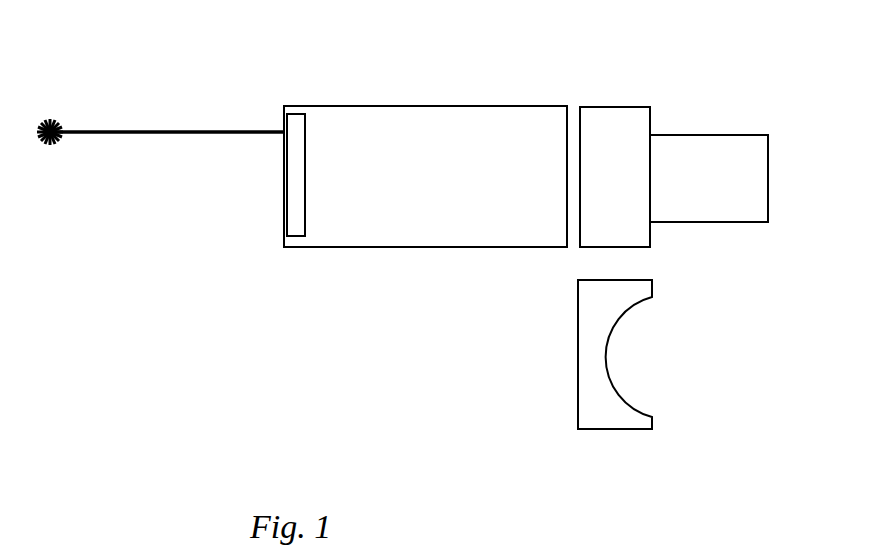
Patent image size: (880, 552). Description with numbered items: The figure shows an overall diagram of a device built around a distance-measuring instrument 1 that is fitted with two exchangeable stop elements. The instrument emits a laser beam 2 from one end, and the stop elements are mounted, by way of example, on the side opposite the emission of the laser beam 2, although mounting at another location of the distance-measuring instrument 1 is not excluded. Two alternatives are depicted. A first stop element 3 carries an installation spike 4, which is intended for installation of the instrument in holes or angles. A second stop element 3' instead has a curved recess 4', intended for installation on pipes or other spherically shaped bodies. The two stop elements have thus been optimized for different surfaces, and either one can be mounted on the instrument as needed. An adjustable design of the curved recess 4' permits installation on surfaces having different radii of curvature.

The distance-measuring instrument 1 is at (402, 120).
The laser beam 2 is at (192, 134).
The first stop element 3 is at (646, 135).
The installation spike 4 is at (709, 215).
The second stop element 3' is at (626, 398).
The curved recess 4' is at (699, 405).